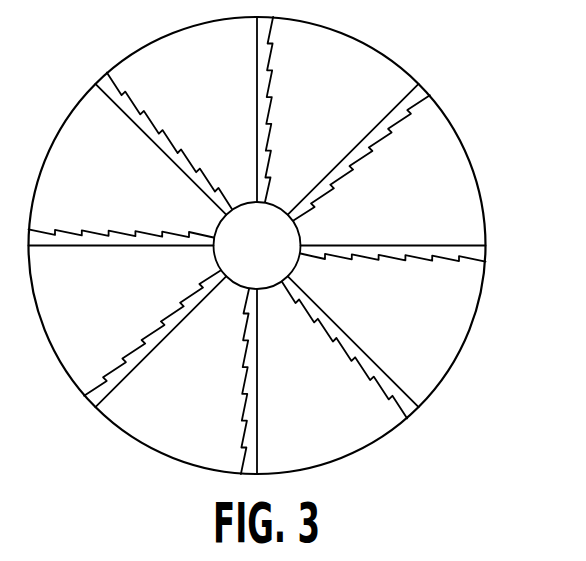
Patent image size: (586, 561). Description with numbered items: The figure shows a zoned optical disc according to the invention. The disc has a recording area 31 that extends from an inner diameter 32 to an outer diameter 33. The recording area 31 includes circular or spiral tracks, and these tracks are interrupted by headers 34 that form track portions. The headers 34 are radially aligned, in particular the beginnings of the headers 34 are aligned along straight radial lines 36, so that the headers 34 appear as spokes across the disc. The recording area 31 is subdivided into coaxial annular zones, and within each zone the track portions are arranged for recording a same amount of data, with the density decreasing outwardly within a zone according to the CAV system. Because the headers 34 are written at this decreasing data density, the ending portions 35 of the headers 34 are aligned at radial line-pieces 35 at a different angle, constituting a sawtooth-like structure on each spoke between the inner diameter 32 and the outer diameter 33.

The recording area 31 is at (433, 123).
The inner diameter 32 is at (269, 275).
The outer diameter 33 is at (480, 182).
The headers 34 is at (430, 251).
The ending portions of the headers 35 is at (450, 259).
The straight radial lines 36 is at (398, 244).